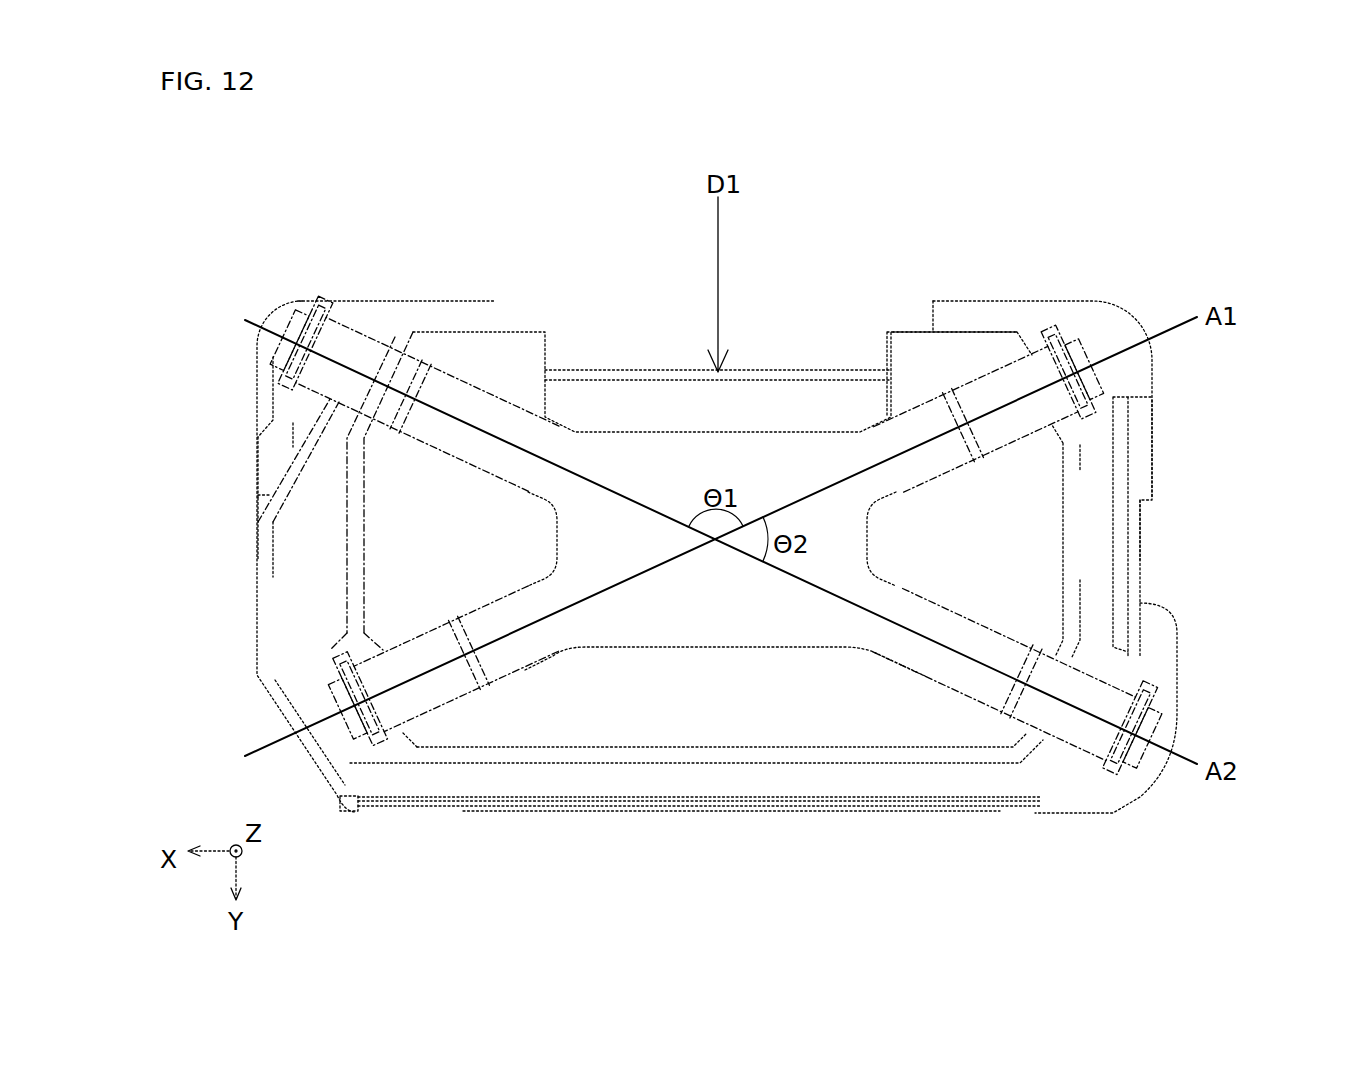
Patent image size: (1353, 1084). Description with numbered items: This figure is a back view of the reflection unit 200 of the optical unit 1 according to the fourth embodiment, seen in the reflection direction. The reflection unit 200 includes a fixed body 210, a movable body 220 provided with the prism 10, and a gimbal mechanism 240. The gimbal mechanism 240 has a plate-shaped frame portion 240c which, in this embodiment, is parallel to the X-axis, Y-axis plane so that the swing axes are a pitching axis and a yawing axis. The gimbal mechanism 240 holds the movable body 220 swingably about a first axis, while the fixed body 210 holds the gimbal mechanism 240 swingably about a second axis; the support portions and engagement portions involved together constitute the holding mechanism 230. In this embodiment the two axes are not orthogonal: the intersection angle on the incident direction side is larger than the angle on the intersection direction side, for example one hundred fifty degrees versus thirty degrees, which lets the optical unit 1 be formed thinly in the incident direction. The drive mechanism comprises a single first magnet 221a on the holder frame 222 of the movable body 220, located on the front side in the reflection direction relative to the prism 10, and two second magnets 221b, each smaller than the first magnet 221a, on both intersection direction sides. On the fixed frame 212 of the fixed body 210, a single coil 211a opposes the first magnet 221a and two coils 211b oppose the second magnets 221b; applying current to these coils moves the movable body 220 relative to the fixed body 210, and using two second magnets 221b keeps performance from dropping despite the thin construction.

The optical unit 1 is at (1077, 250).
The reflection unit 200 is at (672, 480).
The prism 10 is at (598, 395).
The fixed body 210 is at (452, 296).
The fixed frame 212 is at (258, 412).
The movable body 220 is at (517, 327).
The holder frame 222 is at (363, 588).
The holding mechanism 230 is at (328, 305).
The gimbal mechanism 240 is at (624, 640).
The frame portion 240c is at (767, 628).
The coil 211a is at (702, 826).
The first magnet 221a is at (699, 808).
The coil 211b is at (243, 567).
The second magnet 221b is at (703, 553).